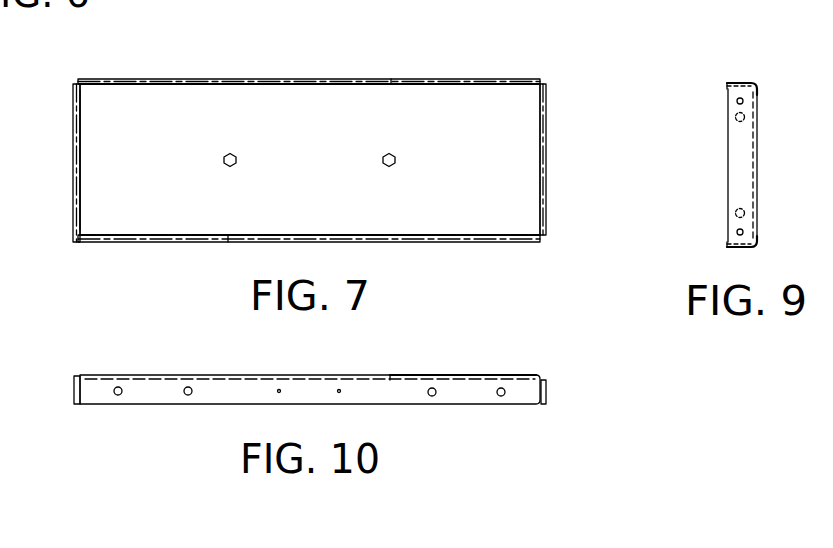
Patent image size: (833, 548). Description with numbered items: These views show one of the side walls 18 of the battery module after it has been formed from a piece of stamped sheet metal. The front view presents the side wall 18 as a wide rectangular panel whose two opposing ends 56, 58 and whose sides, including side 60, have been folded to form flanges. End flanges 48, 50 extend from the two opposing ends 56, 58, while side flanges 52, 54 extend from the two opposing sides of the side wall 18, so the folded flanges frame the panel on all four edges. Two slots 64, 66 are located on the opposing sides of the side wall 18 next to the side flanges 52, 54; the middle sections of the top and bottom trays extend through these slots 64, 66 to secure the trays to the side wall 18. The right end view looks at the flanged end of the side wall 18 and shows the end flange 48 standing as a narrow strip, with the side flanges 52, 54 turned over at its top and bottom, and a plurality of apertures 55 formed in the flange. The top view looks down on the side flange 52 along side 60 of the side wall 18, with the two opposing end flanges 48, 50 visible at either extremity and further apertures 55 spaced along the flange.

In FIG. 7, the side wall 18 is at (320, 70).
In FIG. 9, the side wall 18 is at (714, 72).
In FIG. 10, the side wall 18 is at (526, 352).
In FIG. 7, the end flange 48 is at (546, 112).
In FIG. 9, the end flange 48 is at (740, 165).
In FIG. 10, the end flange 48 is at (547, 390).
In FIG. 7, the end flange 50 is at (73, 124).
In FIG. 10, the end flange 50 is at (74, 390).
In FIG. 7, the side flange 52 is at (376, 79).
In FIG. 9, the side flange 52 is at (740, 83).
In FIG. 10, the side flange 52 is at (205, 387).
In FIG. 7, the side flange 54 is at (418, 243).
In FIG. 9, the side flange 54 is at (745, 247).
In FIG. 9, the apertures 55 is at (735, 126).
In FIG. 10, the apertures 55 is at (433, 397).
In FIG. 7, the end 56 is at (546, 160).
In FIG. 9, the end 56 is at (758, 125).
In FIG. 7, the end 58 is at (73, 165).
In FIG. 10, the side 60 is at (459, 375).
In FIG. 7, the slot 64 is at (313, 86).
In FIG. 7, the slot 66 is at (320, 235).